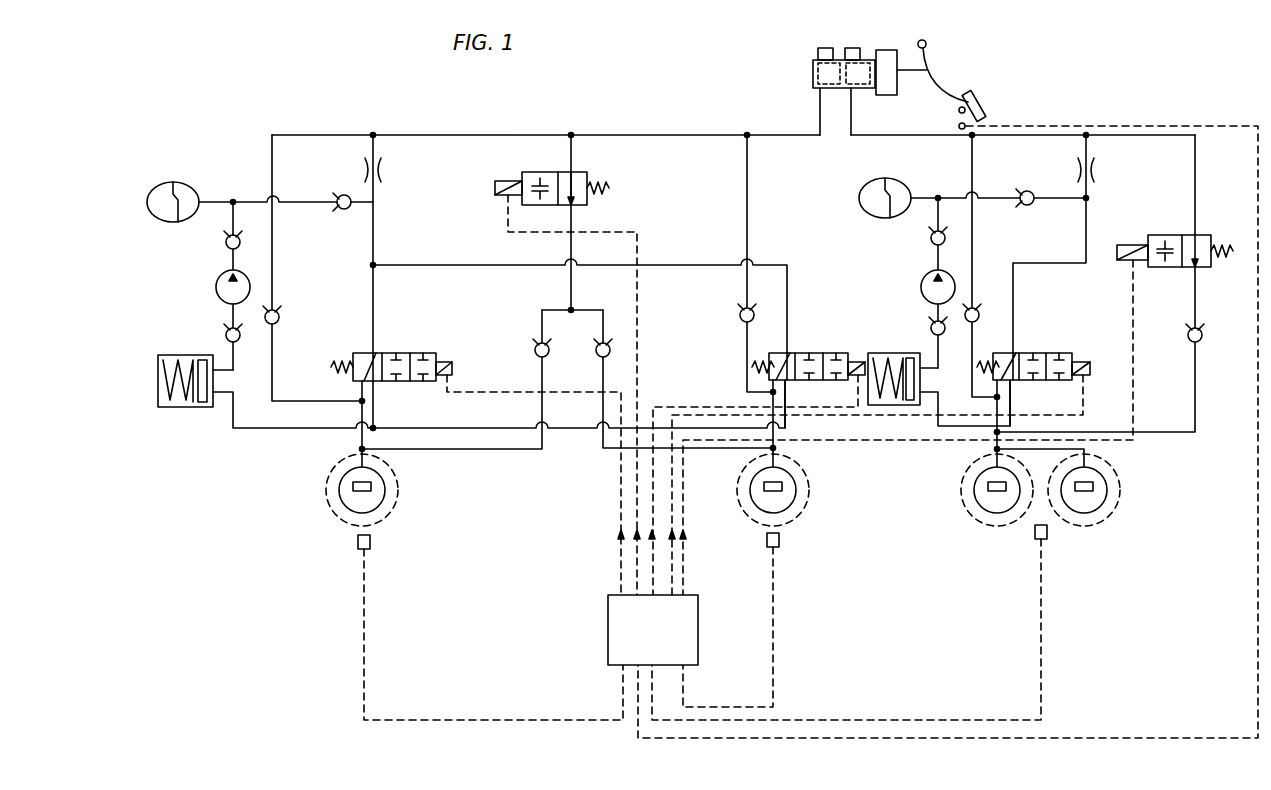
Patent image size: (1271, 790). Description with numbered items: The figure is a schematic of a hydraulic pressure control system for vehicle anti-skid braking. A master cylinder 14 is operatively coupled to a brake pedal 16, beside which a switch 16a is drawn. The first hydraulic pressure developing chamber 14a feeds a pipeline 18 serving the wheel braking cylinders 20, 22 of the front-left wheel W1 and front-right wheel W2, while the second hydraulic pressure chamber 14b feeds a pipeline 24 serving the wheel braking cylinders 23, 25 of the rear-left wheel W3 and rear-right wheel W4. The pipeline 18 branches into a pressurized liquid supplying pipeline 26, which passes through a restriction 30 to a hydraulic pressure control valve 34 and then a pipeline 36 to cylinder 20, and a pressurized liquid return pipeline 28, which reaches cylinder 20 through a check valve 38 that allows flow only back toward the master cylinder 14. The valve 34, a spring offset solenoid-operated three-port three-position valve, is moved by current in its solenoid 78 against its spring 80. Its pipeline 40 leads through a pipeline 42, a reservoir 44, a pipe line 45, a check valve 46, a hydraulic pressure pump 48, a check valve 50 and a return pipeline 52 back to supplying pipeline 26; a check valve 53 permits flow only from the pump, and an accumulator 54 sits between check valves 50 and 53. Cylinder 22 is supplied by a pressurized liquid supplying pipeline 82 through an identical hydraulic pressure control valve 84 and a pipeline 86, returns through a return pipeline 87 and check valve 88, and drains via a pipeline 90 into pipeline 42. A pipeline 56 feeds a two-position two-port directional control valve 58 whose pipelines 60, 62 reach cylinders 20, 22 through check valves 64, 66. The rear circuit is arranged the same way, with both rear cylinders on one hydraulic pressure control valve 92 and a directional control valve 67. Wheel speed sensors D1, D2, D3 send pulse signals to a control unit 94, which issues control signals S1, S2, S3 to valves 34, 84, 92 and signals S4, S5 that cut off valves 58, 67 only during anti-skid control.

The master cylinder 14 is at (843, 46).
The first hydraulic pressure developing chamber 14a is at (818, 72).
The second hydraulic pressure chamber 14b is at (866, 68).
The brake pedal 16 is at (982, 100).
The brake pedal switch 16a is at (975, 124).
The pipeline 18 is at (720, 133).
The wheel braking cylinder 20 is at (371, 488).
The wheel braking cylinder 22 is at (782, 487).
The wheel braking cylinder 23 is at (985, 487).
The pipeline 24 is at (906, 133).
The wheel braking cylinder 25 is at (1092, 487).
The pressurized liquid supplying pipeline 26 is at (378, 140).
The pressurized liquid return pipeline 28 is at (322, 133).
The restriction 30 is at (383, 172).
The hydraulic pressure control valve 34 is at (412, 348).
The pipeline 36 is at (358, 443).
The check valve 38 is at (278, 312).
The pipeline 40 is at (376, 400).
The pipeline 42 is at (255, 430).
The reservoir 44 is at (190, 407).
The pipe line 45 is at (234, 371).
The check valve 46 is at (226, 337).
The hydraulic pressure pump 48 is at (216, 290).
The check valve 50 is at (226, 245).
The return pipeline 52 is at (240, 200).
The check valve 53 is at (340, 196).
The accumulator 54 is at (168, 182).
The pipeline 56 is at (578, 170).
The two-position two-port type directional control valve 58 is at (545, 168).
The pipeline 60 is at (542, 322).
The pipeline 62 is at (603, 322).
The check valve 64 is at (536, 357).
The check valve 66 is at (603, 358).
The two-position two-port type directional control valve 67 is at (1204, 235).
The solenoid 78 is at (453, 369).
The spring 80 is at (331, 367).
The pressurized liquid supplying pipeline 82 is at (467, 264).
The hydraulic pressure control valve 84 is at (814, 350).
The pipeline 86 is at (790, 437).
The return pipeline 87 is at (750, 243).
The check valve 88 is at (744, 314).
The pipeline 90 is at (710, 440).
The hydraulic pressure control valve 92 is at (1043, 350).
The control unit 94 is at (608, 650).
The front-left wheel W1 is at (330, 516).
The front-right wheel W2 is at (798, 518).
The rear-left wheel W3 is at (962, 510).
The rear-right wheel W4 is at (1118, 510).
The wheel speed sensor D1 is at (358, 546).
The wheel speed sensor D2 is at (768, 544).
The wheel speed sensor D3 is at (1035, 540).
The control signal S1 is at (617, 536).
The control signal S2 is at (652, 556).
The control signal S3 is at (652, 504).
The control signal S4 is at (621, 473).
The control signal S5 is at (683, 582).